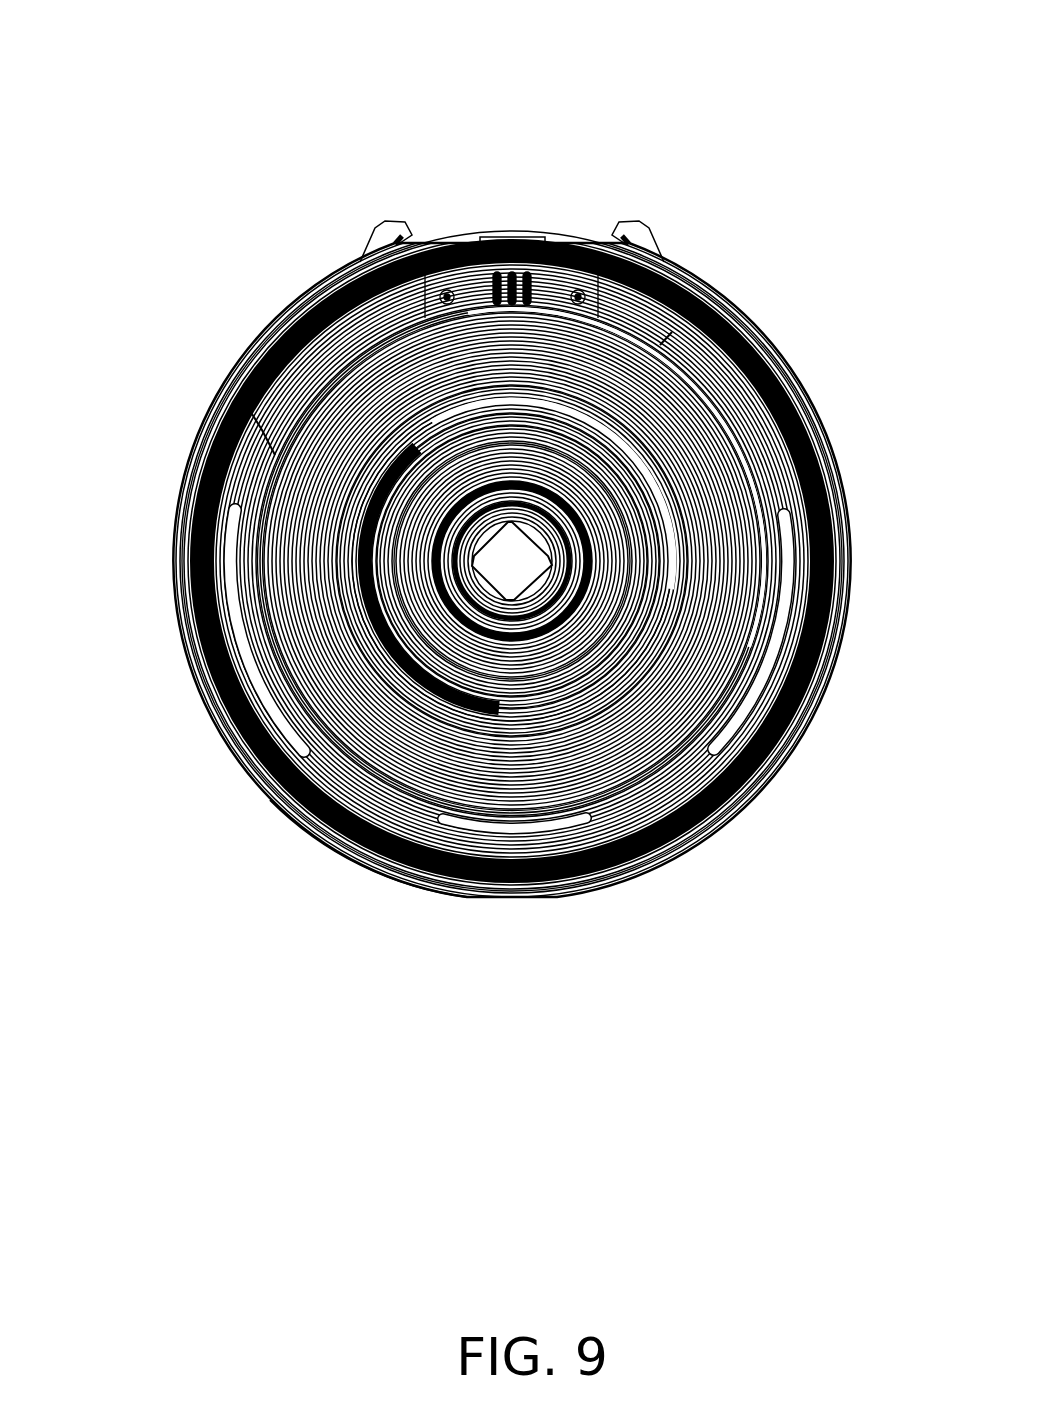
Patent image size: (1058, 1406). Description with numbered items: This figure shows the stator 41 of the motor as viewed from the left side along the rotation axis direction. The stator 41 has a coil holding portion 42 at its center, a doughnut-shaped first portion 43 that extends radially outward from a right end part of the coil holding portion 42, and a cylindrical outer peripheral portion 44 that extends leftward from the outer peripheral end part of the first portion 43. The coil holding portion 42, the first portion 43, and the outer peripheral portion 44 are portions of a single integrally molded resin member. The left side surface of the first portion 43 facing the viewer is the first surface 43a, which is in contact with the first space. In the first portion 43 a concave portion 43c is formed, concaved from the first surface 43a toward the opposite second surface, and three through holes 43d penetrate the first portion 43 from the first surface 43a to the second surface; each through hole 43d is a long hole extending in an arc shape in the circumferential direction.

The stator 41 is at (690, 277).
The coil holding portion 42 is at (620, 763).
The first portion 43 is at (330, 348).
The first surface 43a is at (318, 318).
The concave portion 43c is at (242, 398).
The through hole 43d is at (245, 600).
The outer peripheral portion 44 is at (298, 806).